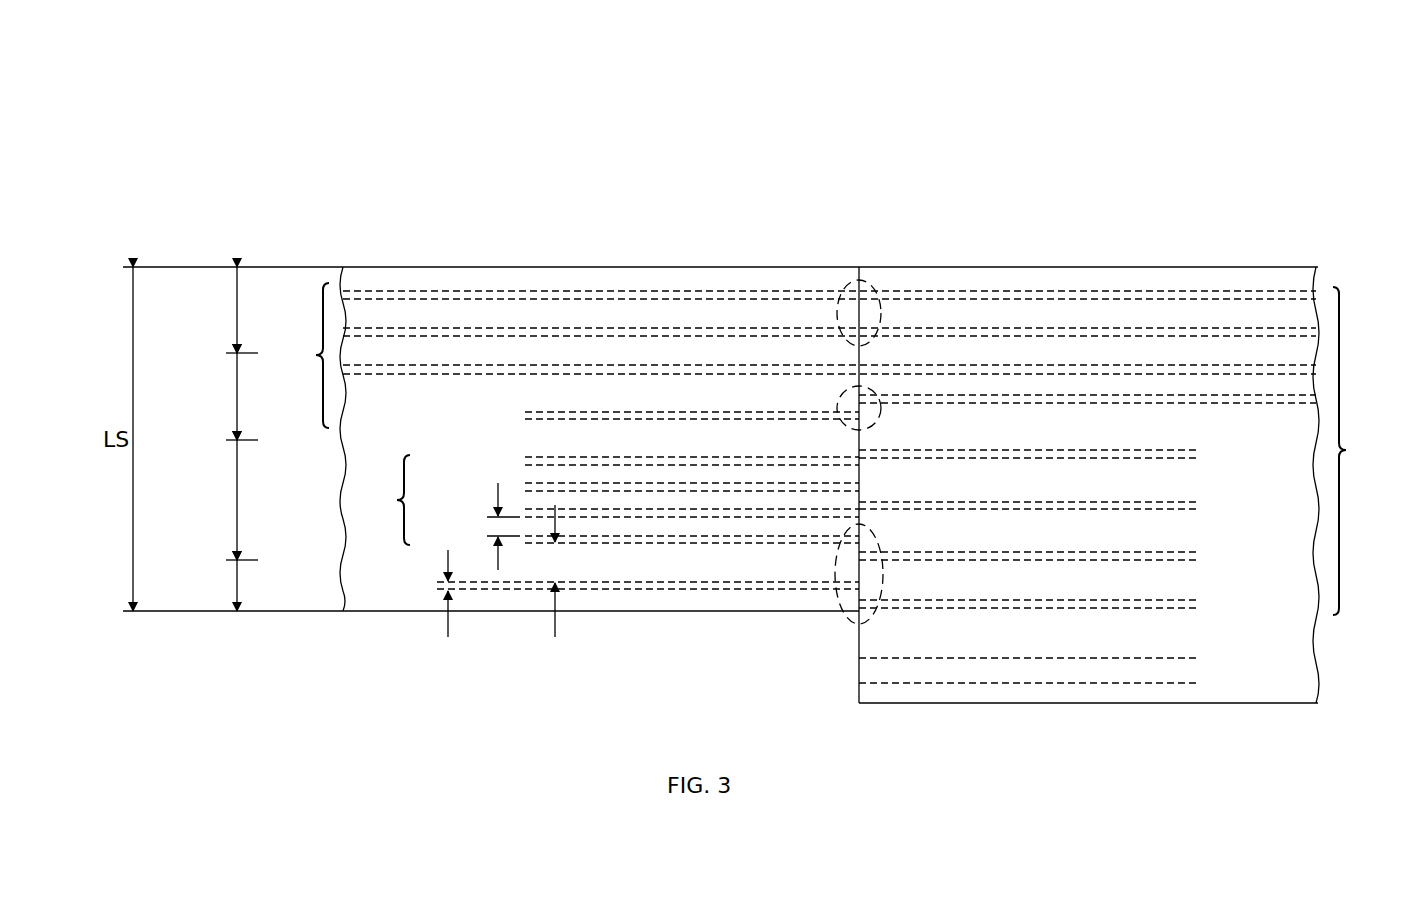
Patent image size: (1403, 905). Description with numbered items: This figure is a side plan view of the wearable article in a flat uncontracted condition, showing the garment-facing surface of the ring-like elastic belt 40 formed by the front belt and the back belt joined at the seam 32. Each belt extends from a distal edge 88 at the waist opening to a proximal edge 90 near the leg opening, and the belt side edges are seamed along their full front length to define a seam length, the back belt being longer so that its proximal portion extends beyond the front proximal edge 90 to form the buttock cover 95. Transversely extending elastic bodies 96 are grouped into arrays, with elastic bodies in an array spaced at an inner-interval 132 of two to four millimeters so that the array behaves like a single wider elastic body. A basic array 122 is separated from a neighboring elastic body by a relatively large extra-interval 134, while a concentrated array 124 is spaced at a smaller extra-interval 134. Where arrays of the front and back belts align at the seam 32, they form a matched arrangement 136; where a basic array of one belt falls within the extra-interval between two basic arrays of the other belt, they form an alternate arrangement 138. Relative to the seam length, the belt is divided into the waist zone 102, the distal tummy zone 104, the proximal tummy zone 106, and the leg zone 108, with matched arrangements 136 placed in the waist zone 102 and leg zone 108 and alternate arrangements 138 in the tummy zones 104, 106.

The ring-like elastic belt 40 is at (706, 162).
The distal edge 88 is at (553, 266).
The proximal edge 90 is at (657, 612).
The seam 32 is at (859, 266).
The buttock cover 95 is at (846, 673).
The elastic body 96 is at (448, 290).
The matched arrangement 136 is at (838, 318).
The alternate arrangement 138 is at (863, 428).
The waist zone 102 is at (237, 310).
The distal tummy zone 104 is at (237, 398).
The proximal tummy zone 106 is at (237, 500).
The leg zone 108 is at (237, 585).
The basic array 122 is at (833, 449).
The concentrated array 124 is at (380, 500).
The extra-interval 134 is at (497, 486).
The inner-interval 132 is at (448, 628).